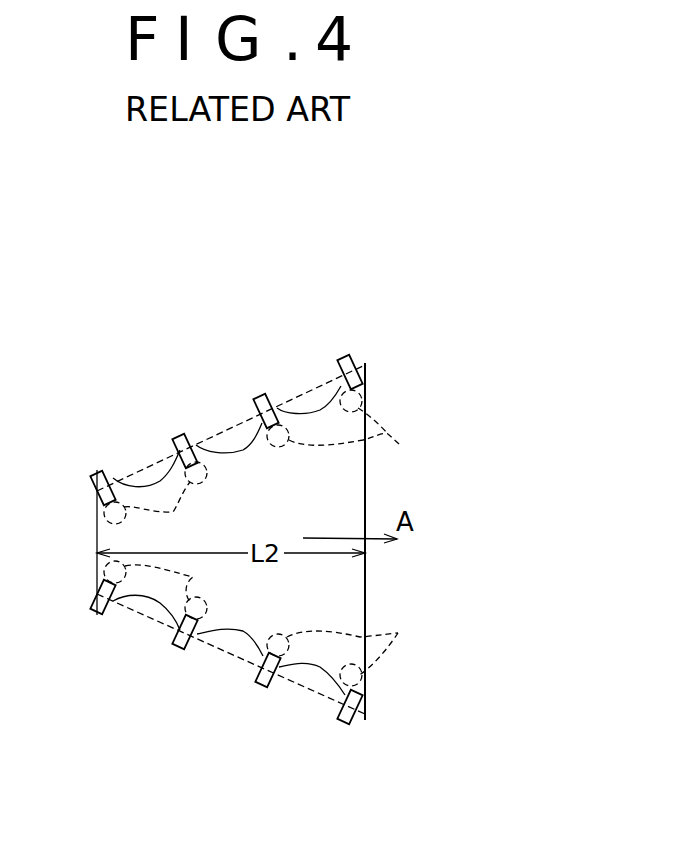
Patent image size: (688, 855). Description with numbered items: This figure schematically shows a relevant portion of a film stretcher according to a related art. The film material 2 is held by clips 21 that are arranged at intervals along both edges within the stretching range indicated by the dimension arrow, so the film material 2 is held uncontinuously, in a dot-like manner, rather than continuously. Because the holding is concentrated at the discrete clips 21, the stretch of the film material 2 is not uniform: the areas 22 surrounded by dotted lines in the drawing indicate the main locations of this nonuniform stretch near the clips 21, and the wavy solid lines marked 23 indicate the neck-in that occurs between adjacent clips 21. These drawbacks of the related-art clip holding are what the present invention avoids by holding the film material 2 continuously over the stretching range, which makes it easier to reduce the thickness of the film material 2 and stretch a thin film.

The film material 2 is at (347, 593).
The clip 21 is at (97, 470).
The area of nonuniform stretch 22 is at (274, 538).
The neck-in 23 is at (150, 478).